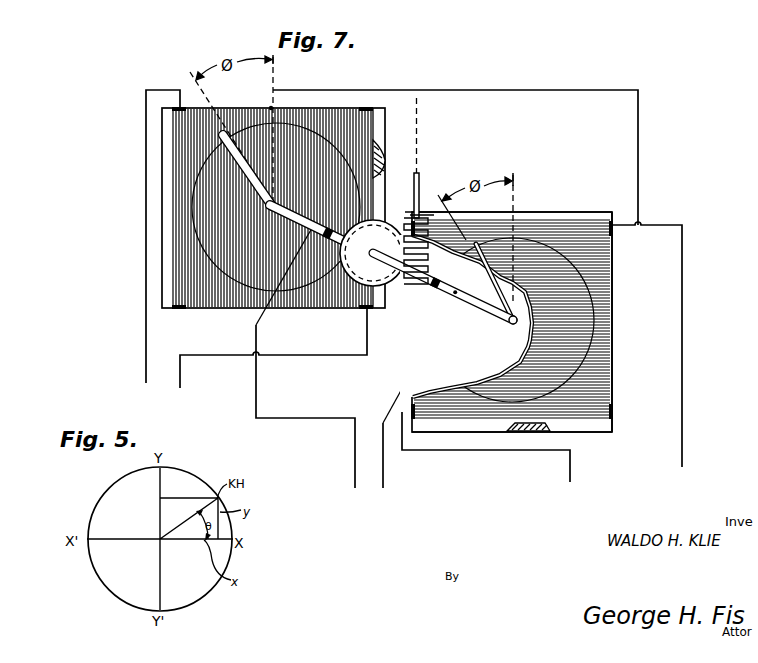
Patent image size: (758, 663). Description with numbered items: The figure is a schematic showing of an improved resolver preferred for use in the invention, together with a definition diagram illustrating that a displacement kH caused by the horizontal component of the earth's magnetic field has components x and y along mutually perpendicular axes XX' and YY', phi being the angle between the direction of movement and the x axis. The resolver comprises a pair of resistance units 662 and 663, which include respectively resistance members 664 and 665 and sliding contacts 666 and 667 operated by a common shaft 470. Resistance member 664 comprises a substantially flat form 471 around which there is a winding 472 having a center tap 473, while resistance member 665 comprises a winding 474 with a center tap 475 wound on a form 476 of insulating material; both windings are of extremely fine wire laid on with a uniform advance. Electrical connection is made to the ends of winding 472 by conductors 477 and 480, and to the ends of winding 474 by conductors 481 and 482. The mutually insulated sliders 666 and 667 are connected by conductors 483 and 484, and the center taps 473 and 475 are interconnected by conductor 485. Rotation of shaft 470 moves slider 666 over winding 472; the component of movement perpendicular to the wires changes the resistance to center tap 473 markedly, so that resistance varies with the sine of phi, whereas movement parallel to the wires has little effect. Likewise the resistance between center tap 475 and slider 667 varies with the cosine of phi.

The common shaft 470 is at (420, 180).
The flat form 471 is at (388, 158).
The winding 472 is at (204, 112).
The center tap 473 is at (270, 108).
The winding 474 is at (604, 352).
The center tap 475 is at (612, 318).
The form of insulating material 476 is at (518, 212).
The conductor 477 is at (145, 363).
The conductor 480 is at (181, 386).
The conductor 481 is at (570, 462).
The conductor 482 is at (682, 463).
The conductor 483 is at (355, 450).
The conductor 484 is at (385, 462).
The conductor 485 is at (547, 93).
The resistance unit 662 is at (135, 194).
The resistance unit 663 is at (489, 458).
The resistance member 664 is at (222, 310).
The resistance member 665 is at (612, 393).
The sliding contact 666 is at (252, 183).
The sliding contact 667 is at (492, 289).